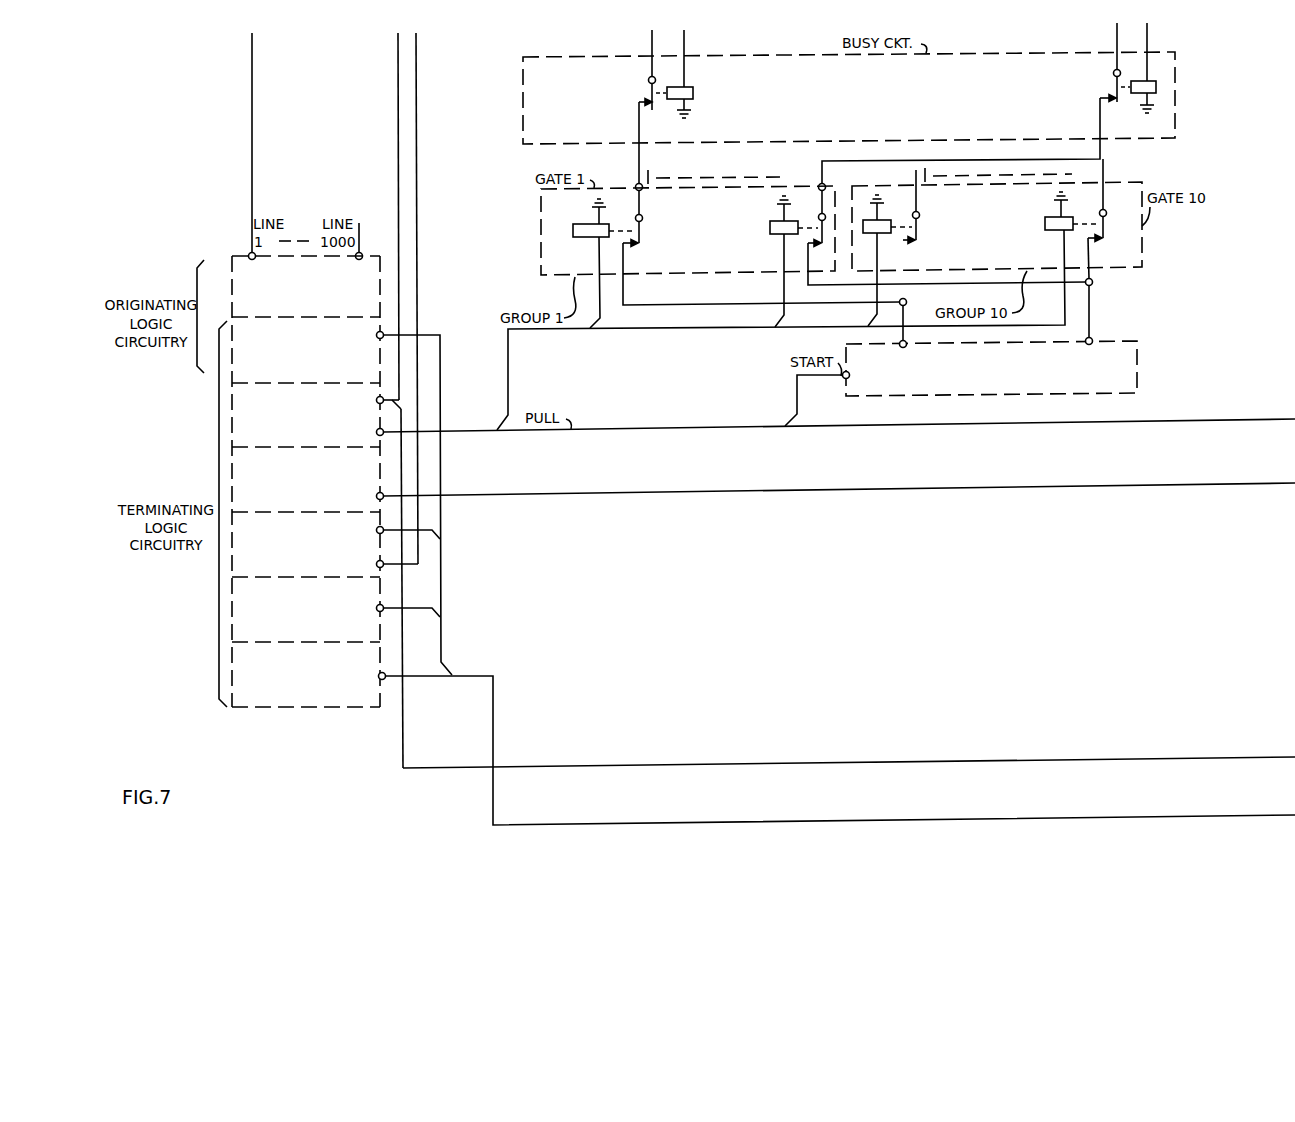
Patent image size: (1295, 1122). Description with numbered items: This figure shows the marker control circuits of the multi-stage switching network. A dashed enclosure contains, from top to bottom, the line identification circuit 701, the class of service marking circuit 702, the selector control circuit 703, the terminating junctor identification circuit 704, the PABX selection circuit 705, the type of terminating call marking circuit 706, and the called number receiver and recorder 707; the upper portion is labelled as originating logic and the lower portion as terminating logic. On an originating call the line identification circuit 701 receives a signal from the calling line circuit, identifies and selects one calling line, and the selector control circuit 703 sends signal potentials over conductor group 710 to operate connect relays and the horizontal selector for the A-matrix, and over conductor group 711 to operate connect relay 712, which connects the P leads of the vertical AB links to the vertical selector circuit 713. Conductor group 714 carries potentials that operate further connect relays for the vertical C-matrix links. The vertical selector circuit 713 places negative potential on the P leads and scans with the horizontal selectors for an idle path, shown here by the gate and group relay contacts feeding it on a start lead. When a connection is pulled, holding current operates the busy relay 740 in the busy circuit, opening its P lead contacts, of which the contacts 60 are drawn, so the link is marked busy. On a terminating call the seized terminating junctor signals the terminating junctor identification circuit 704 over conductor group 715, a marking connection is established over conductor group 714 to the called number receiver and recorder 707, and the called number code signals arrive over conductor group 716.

The relay and contacts 60 is at (1156, 86).
The line identification circuit 701 is at (306, 286).
The class of service marking circuit 702 is at (342, 496).
The selector control circuit 703 is at (316, 418).
The terminating junctor identification circuit 704 is at (308, 482).
The PABX selection circuit 705 is at (336, 545).
The type of terminating call marking circuit 706 is at (336, 611).
The called number receiver and recorder 707 is at (309, 675).
The conductor group 710 is at (398, 161).
The conductor group 711 is at (477, 429).
The connect relay 712 is at (583, 223).
The vertical selector circuit 713 is at (990, 367).
The conductor group 714 is at (1274, 758).
The conductor group 715 is at (1274, 484).
The conductor group 716 is at (1274, 817).
The busy relay 740 is at (694, 93).